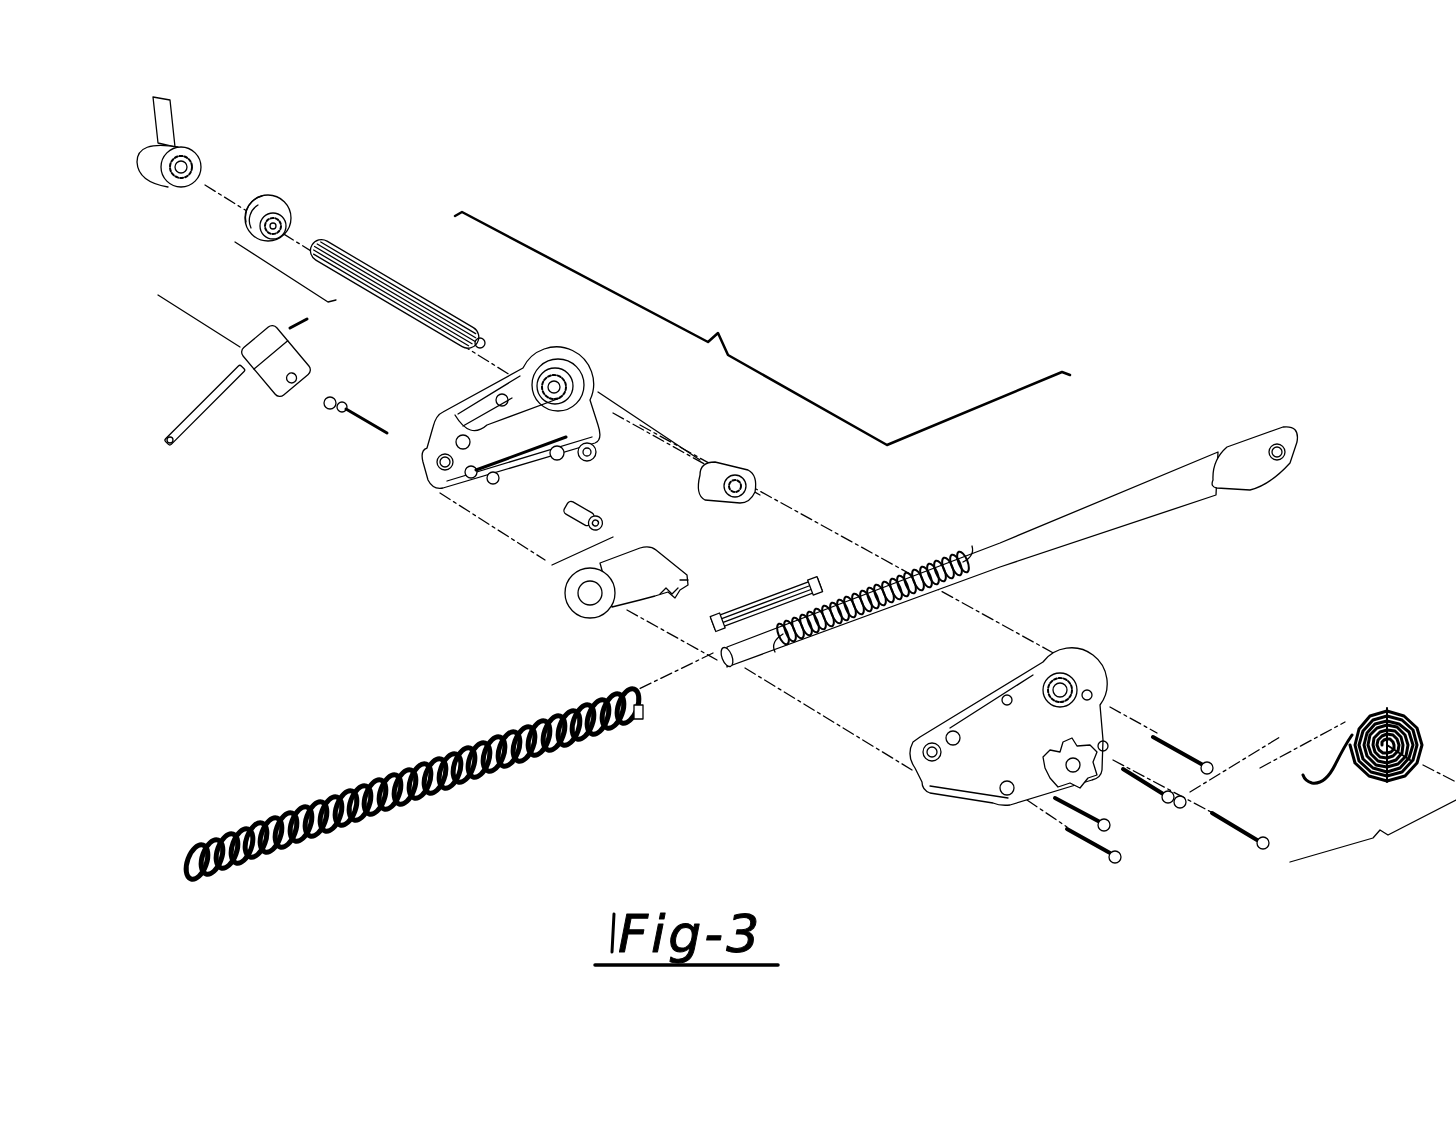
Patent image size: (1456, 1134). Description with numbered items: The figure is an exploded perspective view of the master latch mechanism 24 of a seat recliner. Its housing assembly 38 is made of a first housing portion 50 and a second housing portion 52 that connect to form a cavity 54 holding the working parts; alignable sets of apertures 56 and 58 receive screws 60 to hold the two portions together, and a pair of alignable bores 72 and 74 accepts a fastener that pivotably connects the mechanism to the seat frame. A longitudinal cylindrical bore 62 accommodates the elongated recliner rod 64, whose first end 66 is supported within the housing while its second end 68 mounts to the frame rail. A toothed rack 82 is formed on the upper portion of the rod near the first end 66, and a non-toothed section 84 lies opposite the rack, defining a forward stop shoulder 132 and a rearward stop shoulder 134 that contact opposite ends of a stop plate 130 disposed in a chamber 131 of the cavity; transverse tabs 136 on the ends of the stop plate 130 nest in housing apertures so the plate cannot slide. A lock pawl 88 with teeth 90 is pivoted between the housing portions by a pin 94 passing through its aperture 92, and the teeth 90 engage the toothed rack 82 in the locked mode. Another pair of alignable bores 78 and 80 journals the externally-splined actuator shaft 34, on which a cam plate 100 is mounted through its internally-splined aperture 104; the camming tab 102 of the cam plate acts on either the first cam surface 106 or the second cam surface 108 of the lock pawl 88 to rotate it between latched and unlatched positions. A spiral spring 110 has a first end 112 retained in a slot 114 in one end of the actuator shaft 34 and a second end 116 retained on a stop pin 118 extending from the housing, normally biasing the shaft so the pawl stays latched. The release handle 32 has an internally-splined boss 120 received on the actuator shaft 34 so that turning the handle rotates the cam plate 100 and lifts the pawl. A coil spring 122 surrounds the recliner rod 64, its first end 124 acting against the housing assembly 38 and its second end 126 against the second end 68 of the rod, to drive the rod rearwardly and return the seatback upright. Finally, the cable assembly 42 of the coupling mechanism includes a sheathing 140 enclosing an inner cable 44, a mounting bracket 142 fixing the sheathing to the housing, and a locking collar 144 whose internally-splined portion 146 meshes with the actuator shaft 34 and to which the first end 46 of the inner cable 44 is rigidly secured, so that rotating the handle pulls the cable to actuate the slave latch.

The master latch mechanism 24 is at (762, 328).
The release handle 32 is at (223, 137).
The actuator shaft 34 is at (411, 285).
The housing assembly 38 is at (503, 399).
The cable assembly 42 is at (252, 382).
The inner cable 44 is at (182, 423).
The first end 46 is at (300, 330).
The first housing portion 50 is at (527, 367).
The second housing portion 52 is at (1043, 726).
The cavity 54 is at (456, 410).
The apertures 56 is at (586, 356).
The apertures 58 is at (1109, 653).
The screws 60 is at (1177, 743).
The cylindrical bore 62 is at (597, 440).
The recliner rod 64 is at (1005, 572).
The first end 66 is at (742, 666).
The second end 68 is at (1233, 463).
The bore 72 is at (560, 458).
The bore 74 is at (1087, 773).
The bore 78 is at (563, 362).
The bore 80 is at (1070, 680).
The toothed rack 82 is at (966, 544).
The non-toothed section 84 is at (915, 576).
The lock pawl 88 is at (623, 610).
The teeth 90 is at (668, 602).
The aperture 92 is at (568, 602).
The pin 94 is at (533, 543).
The cam plate 100 is at (731, 440).
The camming tab 102 is at (690, 467).
The internally-splined aperture 104 is at (742, 478).
The first cam surface 106 is at (675, 576).
The second cam surface 108 is at (630, 588).
The spiral spring 110 is at (1365, 739).
The first end 112 is at (1381, 782).
The slot 114 is at (478, 340).
The second end 116 is at (1315, 778).
The stop pin 118 is at (1172, 805).
The internally-splined boss 120 is at (205, 180).
The coil spring 122 is at (436, 823).
The first end 124 is at (207, 890).
The second end 126 is at (638, 714).
The stop plate 130 is at (770, 593).
The chamber 131 is at (480, 425).
The forward stop shoulder 132 is at (762, 667).
The rearward stop shoulder 134 is at (950, 587).
The transverse tabs 136 is at (762, 649).
The sheathing 140 is at (203, 422).
The mounting bracket 142 is at (270, 352).
The locking collar 144 is at (315, 187).
The internally-splined portion 146 is at (262, 205).